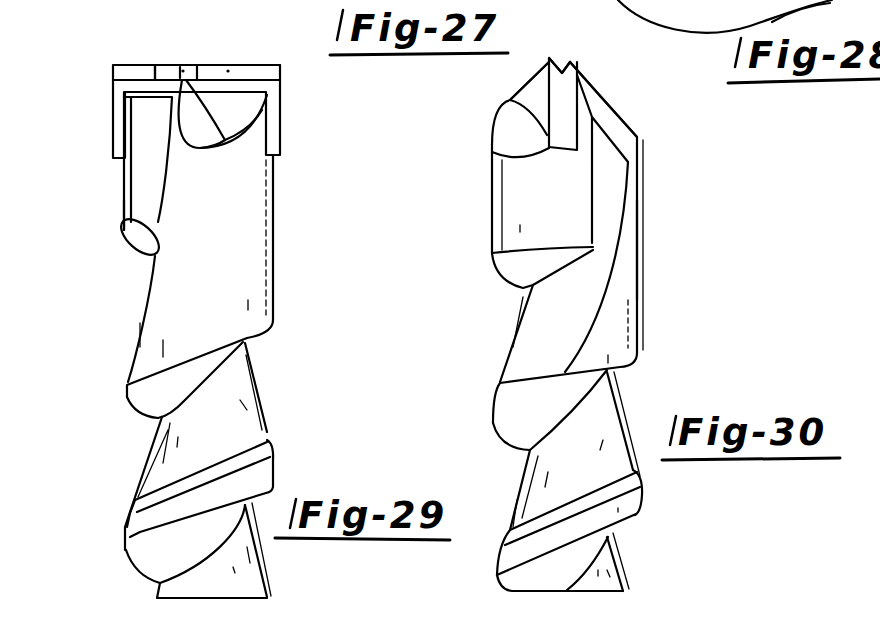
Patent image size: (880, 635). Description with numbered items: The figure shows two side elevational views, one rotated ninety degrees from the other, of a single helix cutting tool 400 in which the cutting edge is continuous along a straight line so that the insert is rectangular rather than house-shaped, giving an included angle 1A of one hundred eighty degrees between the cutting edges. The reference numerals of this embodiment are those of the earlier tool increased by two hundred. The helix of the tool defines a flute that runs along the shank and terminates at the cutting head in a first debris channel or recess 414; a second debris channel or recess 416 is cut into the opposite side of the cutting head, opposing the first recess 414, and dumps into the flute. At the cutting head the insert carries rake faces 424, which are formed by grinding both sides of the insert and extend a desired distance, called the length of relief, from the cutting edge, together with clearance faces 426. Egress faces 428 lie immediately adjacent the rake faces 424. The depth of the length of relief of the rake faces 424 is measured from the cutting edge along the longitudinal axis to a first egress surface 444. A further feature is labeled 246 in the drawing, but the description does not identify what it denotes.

In FIG. 29, the cutting tool 400 is at (272, 350).
In FIG. 30, the cutting tool 400 is at (476, 337).
In FIG. 30, the first debris channel or recess 414 is at (617, 223).
In FIG. 29, the second debris channel or recess 416 is at (128, 220).
In FIG. 29, the rake faces 424 is at (157, 72).
In FIG. 30, the rake faces 424 is at (573, 68).
In FIG. 29, the clearance faces 426 is at (263, 70).
In FIG. 30, the clearance faces 426 is at (552, 62).
In FIG. 29, the egress faces 428 is at (125, 98).
In FIG. 30, the egress faces 428 is at (627, 143).
In FIG. 29, the first egress surface 444 is at (113, 75).
In FIG. 30, the first egress surface 444 is at (577, 73).
In FIG. 29, the recess 246 is at (222, 132).
In FIG. 29, the included angle 1A is at (208, 122).